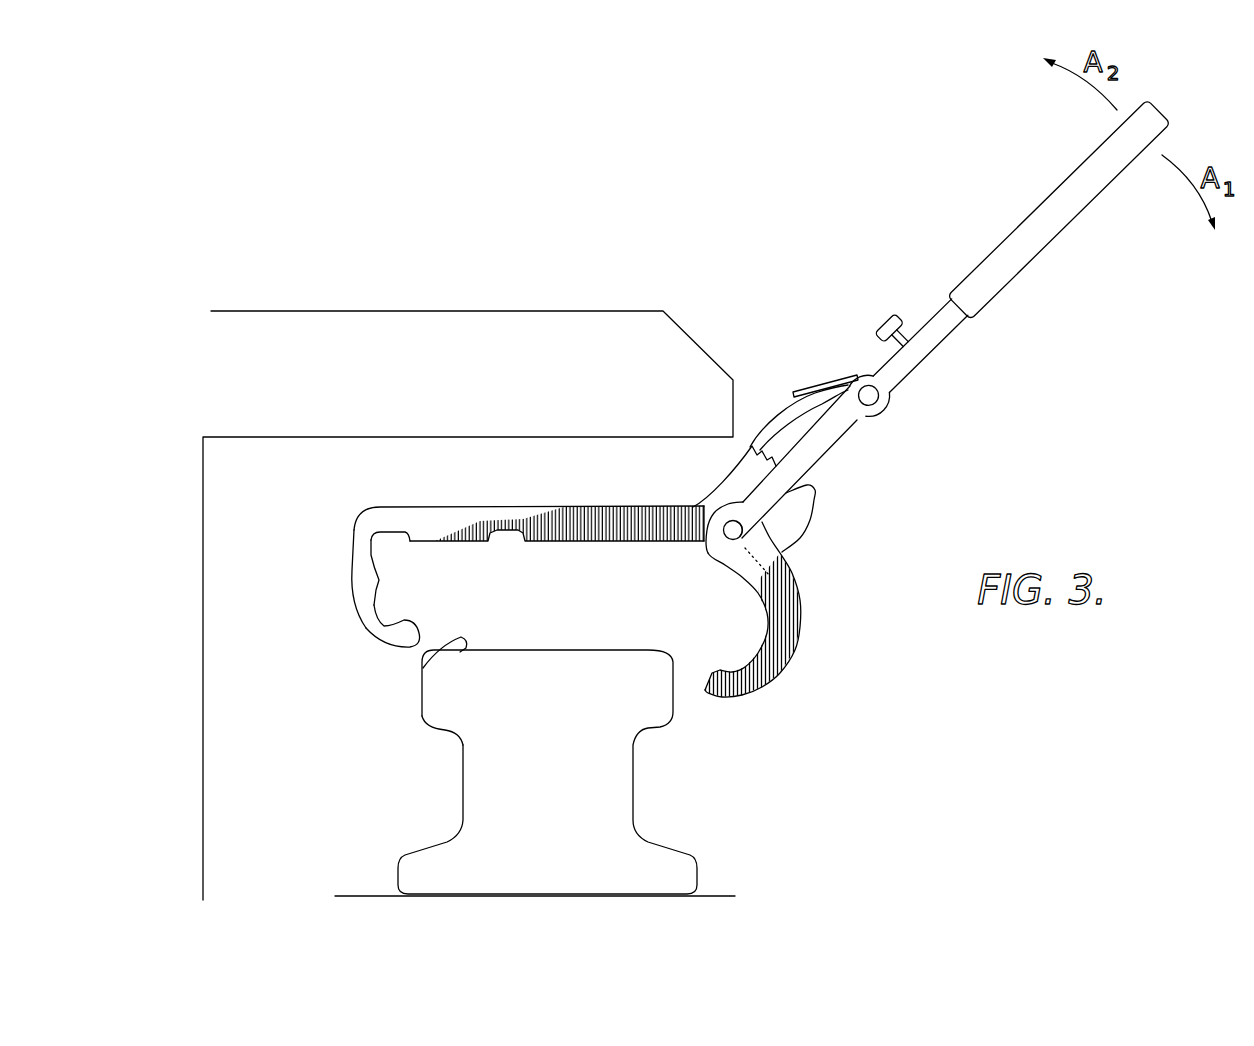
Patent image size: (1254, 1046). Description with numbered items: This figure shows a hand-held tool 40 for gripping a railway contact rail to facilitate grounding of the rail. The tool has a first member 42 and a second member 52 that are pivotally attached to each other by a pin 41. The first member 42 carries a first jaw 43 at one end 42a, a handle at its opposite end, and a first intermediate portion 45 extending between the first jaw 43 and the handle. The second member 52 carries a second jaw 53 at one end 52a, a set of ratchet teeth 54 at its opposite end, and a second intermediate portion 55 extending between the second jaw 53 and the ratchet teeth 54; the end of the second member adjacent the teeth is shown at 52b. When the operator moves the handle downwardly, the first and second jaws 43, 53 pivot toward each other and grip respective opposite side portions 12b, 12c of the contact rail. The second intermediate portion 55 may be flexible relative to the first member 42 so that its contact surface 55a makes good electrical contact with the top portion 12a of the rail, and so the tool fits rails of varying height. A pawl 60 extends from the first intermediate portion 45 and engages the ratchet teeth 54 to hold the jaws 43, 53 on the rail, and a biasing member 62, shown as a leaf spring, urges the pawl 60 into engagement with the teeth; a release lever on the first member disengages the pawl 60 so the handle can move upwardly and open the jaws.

The top portion of contact rail 12a is at (460, 640).
The side portion of contact rail 12b is at (652, 732).
The side portion of contact rail 12c is at (442, 735).
The hand-held tool 40 is at (846, 222).
The pin 41 is at (741, 537).
The first member 42 is at (1001, 252).
The end of first member 42a is at (762, 510).
The first jaw 43 is at (780, 648).
The first intermediate portion 45 is at (820, 455).
The second member 52 is at (370, 508).
The end of second member 52a is at (362, 530).
The clip nose end 52b is at (693, 507).
The second jaw 53 is at (360, 598).
The set of ratchet teeth 54 is at (793, 511).
The second intermediate portion 55 is at (552, 520).
The contact surface 55a is at (548, 543).
The pawl 60 is at (783, 410).
The biasing member 62 is at (810, 388).